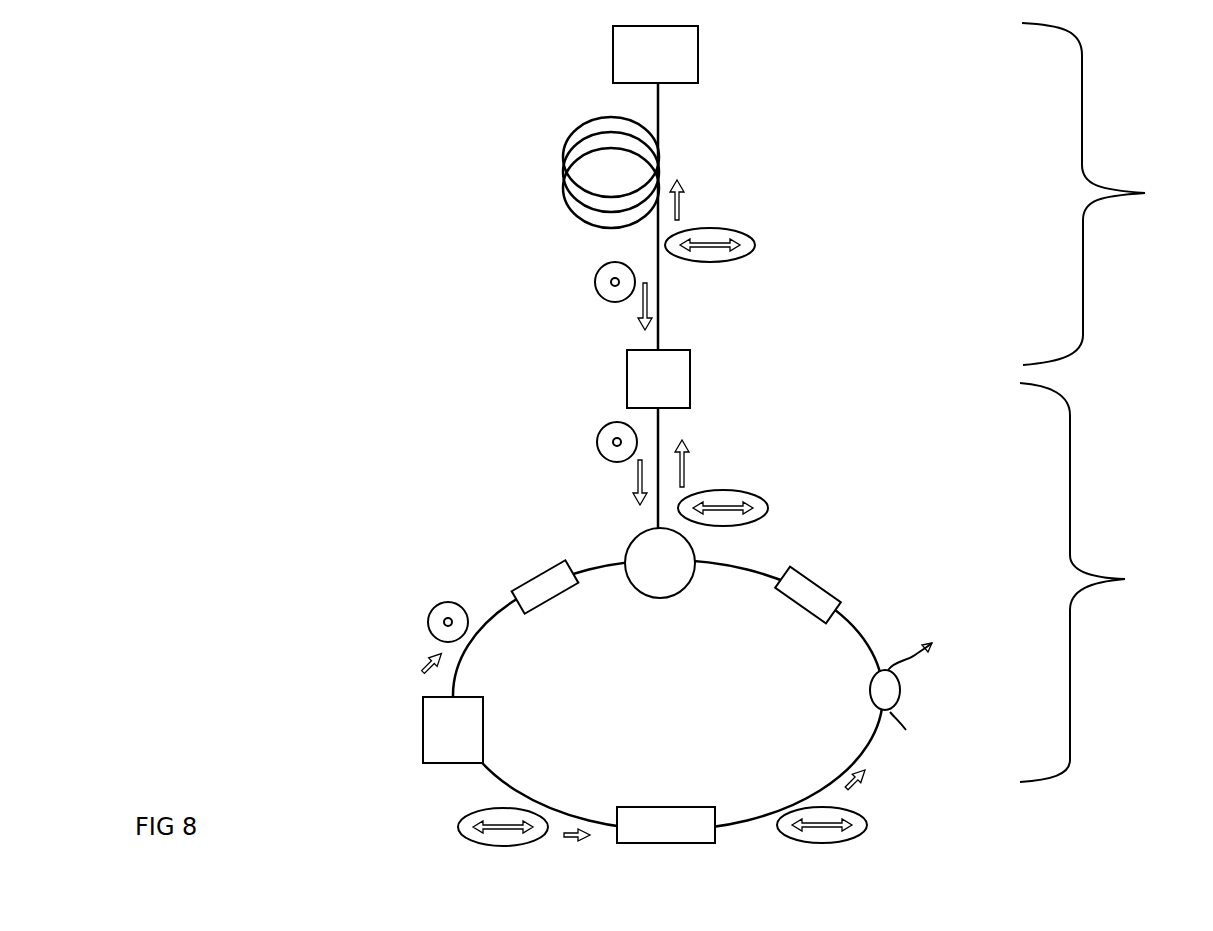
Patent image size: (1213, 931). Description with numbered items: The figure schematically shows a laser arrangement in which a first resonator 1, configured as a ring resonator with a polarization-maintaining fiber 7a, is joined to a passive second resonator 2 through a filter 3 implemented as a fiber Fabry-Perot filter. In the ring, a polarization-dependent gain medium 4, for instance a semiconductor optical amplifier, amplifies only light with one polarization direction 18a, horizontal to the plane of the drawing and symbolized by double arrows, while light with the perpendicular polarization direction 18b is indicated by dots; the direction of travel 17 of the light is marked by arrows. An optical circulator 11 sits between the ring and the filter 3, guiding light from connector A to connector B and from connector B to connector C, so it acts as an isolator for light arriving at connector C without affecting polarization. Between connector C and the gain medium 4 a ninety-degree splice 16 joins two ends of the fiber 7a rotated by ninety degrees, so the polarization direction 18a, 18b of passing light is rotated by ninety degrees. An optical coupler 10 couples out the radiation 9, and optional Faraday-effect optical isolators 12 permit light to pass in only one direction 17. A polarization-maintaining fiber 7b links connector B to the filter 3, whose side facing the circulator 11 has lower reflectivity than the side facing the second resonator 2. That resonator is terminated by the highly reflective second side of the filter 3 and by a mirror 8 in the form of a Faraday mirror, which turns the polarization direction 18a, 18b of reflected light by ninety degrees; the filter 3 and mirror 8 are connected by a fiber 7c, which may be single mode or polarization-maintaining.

The first resonator 1 is at (1094, 582).
The second resonator 2 is at (1102, 194).
The filter 3 is at (675, 377).
The gain medium 4 is at (661, 818).
The polarization-maintaining fiber 7a is at (486, 625).
The polarization-maintaining fiber 7b is at (663, 428).
The fiber 7c is at (563, 173).
The mirror 8 is at (612, 52).
The radiation 9 is at (925, 646).
The optical coupler 10 is at (890, 692).
The optical circulator 11 is at (663, 583).
The optical isolators 12 is at (540, 578).
The 90° splice 16 is at (435, 730).
The direction of travel 17 is at (685, 202).
The polarization direction 18a is at (755, 245).
The polarization direction 18b is at (595, 282).